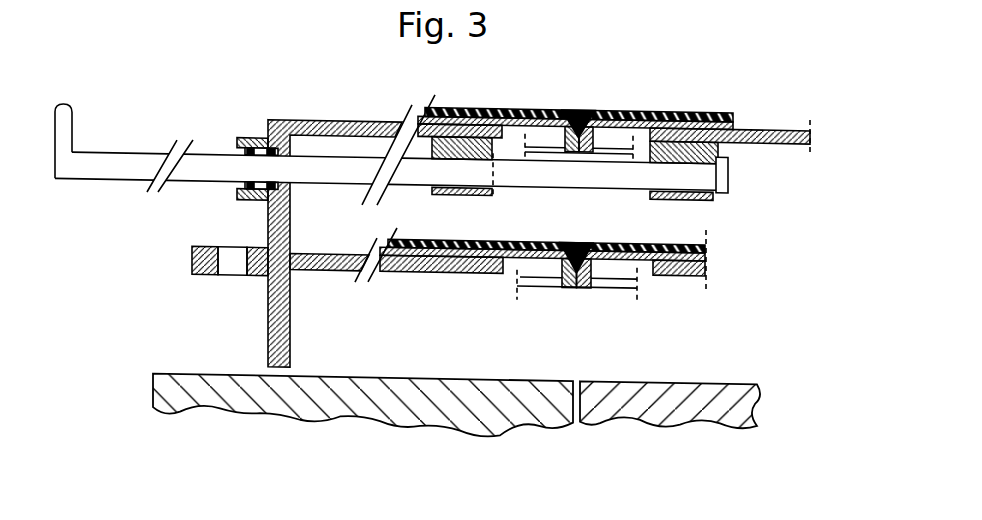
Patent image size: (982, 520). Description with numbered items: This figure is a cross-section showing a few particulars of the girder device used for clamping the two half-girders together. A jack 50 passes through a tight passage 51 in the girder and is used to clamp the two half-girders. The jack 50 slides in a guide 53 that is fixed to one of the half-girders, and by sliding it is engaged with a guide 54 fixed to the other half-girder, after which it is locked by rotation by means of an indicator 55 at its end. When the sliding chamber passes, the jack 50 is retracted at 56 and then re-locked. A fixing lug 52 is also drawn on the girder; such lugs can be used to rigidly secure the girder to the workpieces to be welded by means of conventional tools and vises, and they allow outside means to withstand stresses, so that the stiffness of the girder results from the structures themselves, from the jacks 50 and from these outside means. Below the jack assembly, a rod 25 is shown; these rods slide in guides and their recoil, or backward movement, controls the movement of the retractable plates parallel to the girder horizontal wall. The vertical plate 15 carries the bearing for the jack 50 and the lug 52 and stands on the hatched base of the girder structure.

The support plate 15 is at (280, 325).
The rod 25 is at (535, 280).
The jack 50 is at (103, 169).
The tight passage 51 is at (247, 141).
The lug 52 is at (202, 264).
The guide 53 is at (477, 91).
The guide 54 is at (688, 103).
The indicator 55 is at (723, 170).
The retraction position 56 is at (493, 192).